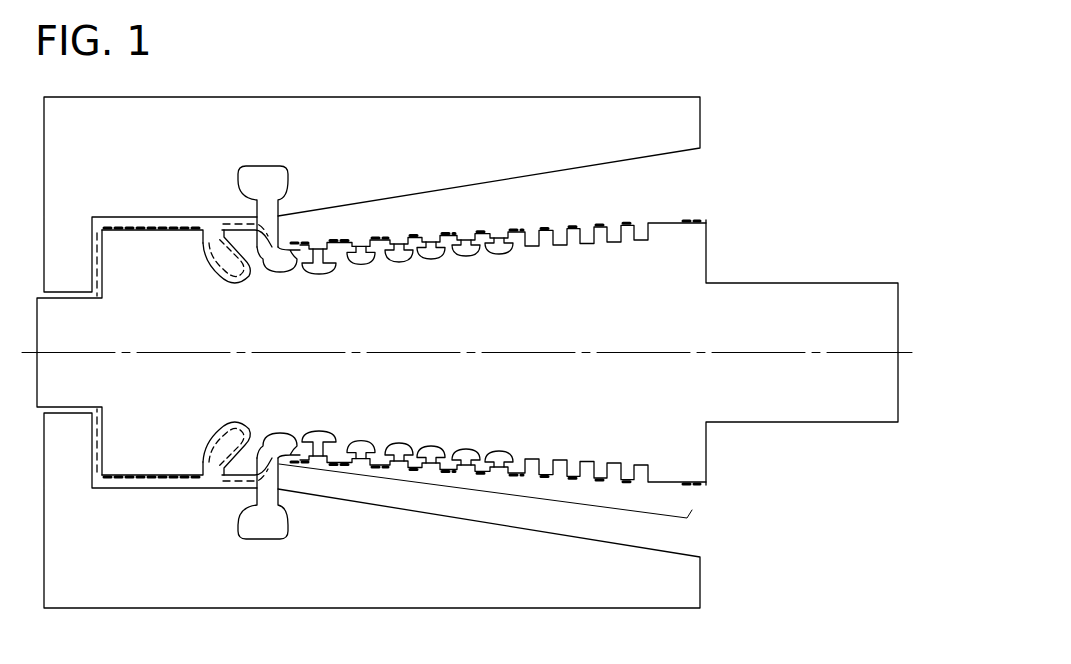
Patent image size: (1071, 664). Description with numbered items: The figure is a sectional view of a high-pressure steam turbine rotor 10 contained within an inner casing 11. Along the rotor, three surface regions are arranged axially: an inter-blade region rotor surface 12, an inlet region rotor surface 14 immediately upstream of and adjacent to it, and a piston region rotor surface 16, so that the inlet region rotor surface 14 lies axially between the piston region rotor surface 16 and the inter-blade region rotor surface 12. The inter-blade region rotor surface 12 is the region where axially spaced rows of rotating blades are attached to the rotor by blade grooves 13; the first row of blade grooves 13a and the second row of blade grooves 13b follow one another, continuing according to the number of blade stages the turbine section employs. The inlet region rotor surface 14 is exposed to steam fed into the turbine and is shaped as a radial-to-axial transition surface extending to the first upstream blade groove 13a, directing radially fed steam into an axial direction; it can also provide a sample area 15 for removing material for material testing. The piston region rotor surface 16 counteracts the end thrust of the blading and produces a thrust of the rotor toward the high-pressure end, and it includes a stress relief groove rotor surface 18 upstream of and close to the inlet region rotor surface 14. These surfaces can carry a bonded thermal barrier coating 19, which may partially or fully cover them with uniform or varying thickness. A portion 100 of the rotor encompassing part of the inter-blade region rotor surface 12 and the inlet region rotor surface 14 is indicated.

The high-pressure steam turbine rotor 10 is at (486, 343).
The inner casing 11 is at (545, 97).
The inter-blade region rotor surface 12 is at (459, 487).
The blade grooves 13 is at (534, 234).
The first row of blade grooves 13a is at (288, 272).
The second row of blade grooves 13b is at (333, 273).
The inlet region rotor surface 14 is at (263, 252).
The sample area 15 is at (276, 458).
The piston region rotor surface 16 is at (253, 490).
The stress relief groove rotor surface 18 is at (216, 262).
The thermal barrier coating 19 is at (380, 241).
The portion of the steam turbine rotor 100 is at (286, 224).